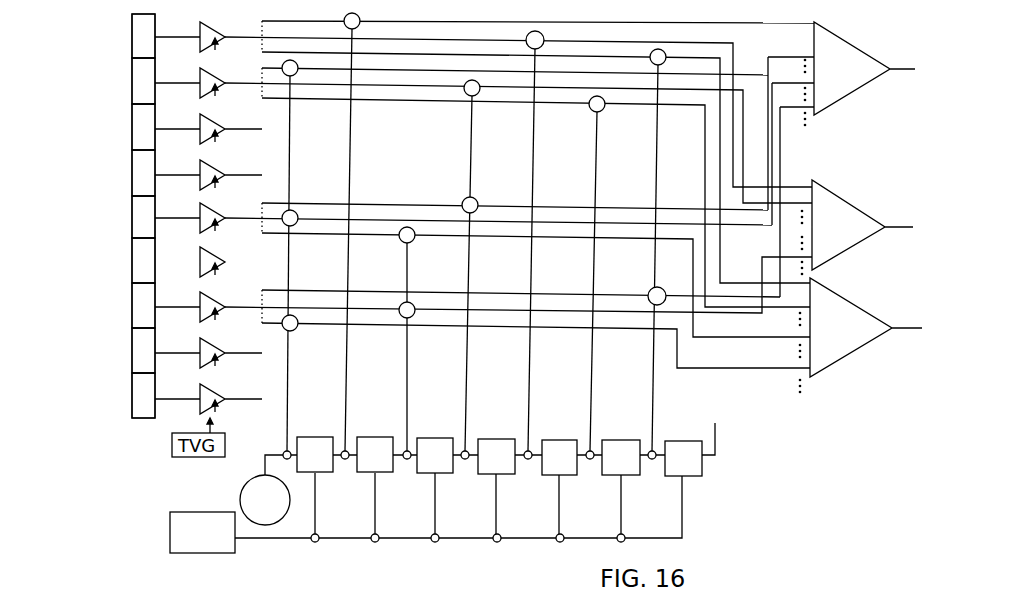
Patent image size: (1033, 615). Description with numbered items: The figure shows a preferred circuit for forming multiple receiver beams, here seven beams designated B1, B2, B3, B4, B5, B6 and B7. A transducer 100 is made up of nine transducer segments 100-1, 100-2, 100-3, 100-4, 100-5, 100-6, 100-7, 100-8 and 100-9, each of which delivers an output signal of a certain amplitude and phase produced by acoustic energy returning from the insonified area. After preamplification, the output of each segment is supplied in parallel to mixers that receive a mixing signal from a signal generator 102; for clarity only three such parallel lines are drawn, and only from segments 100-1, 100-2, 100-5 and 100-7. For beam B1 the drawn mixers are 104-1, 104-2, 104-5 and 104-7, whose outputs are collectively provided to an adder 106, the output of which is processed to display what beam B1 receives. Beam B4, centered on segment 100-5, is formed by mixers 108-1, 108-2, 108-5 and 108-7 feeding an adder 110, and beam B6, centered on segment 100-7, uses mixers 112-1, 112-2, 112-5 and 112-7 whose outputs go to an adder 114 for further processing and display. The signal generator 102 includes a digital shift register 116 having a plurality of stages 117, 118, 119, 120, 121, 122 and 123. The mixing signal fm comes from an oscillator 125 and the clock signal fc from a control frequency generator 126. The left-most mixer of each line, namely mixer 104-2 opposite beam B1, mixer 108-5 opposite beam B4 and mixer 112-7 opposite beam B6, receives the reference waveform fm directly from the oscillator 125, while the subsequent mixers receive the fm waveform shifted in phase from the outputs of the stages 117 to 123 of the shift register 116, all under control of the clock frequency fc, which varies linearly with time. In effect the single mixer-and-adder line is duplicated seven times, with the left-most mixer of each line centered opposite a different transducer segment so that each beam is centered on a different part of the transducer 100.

The transducer 100 is at (127, 449).
The transducer segment 100-1 is at (131, 46).
The transducer segment 100-2 is at (131, 68).
The transducer segment 100-3 is at (131, 112).
The transducer segment 100-4 is at (131, 158).
The transducer segment 100-5 is at (131, 204).
The transducer segment 100-6 is at (131, 246).
The transducer segment 100-7 is at (131, 291).
The transducer segment 100-8 is at (131, 336).
The transducer segment 100-9 is at (131, 406).
The signal generator 102 is at (462, 574).
The mixer 104-1 is at (361, 17).
The mixer 104-2 is at (297, 75).
The mixer 104-5 is at (477, 199).
The mixer 104-7 is at (650, 290).
The adder 106 is at (857, 56).
The mixer 108-1 is at (545, 35).
The mixer 108-2 is at (466, 95).
The mixer 108-5 is at (297, 212).
The mixer 108-7 is at (409, 301).
The adder 110 is at (861, 212).
The mixer 112-1 is at (666, 51).
The mixer 112-2 is at (589, 108).
The mixer 112-5 is at (399, 239).
The mixer 112-7 is at (298, 329).
The adder 114 is at (867, 312).
The digital shift register 116 is at (762, 472).
The shift register stage 117 is at (305, 437).
The shift register stage 118 is at (365, 437).
The shift register stage 119 is at (425, 438).
The shift register stage 120 is at (487, 439).
The shift register stage 121 is at (548, 440).
The shift register stage 122 is at (610, 440).
The shift register stage 123 is at (673, 441).
The oscillator 125 is at (251, 490).
The control frequency generator 126 is at (190, 511).
The beam B1 is at (132, 83).
The beam B2 is at (132, 129).
The beam B3 is at (132, 175).
The beam B4 is at (132, 218).
The beam B5 is at (132, 262).
The beam B6 is at (132, 307).
The beam B7 is at (132, 353).